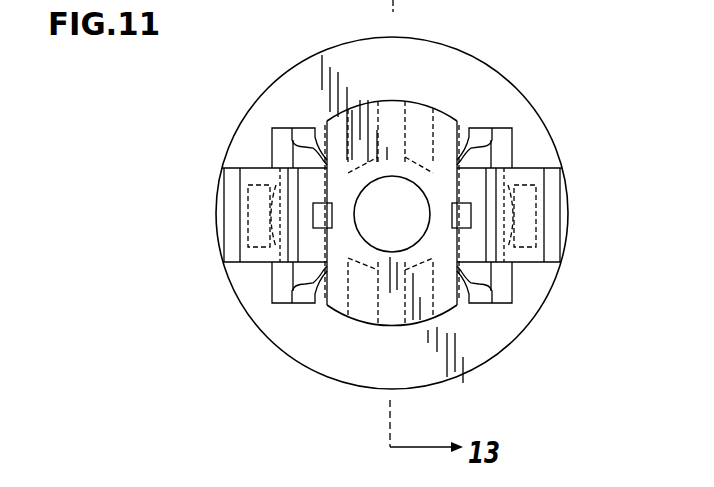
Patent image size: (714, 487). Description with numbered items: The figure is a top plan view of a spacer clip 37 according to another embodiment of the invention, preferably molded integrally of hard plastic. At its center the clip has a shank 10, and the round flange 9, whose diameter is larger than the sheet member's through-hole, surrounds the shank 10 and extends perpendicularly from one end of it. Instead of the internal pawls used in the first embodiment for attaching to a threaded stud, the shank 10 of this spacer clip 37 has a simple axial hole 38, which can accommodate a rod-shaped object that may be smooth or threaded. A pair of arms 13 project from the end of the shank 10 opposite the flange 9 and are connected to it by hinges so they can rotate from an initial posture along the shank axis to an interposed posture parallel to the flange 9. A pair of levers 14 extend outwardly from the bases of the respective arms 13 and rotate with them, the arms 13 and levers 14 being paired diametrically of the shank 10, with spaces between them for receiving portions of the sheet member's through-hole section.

The flange 9 is at (500, 337).
The shank 10 is at (360, 327).
The arms 13 is at (302, 127).
The levers 14 is at (250, 257).
The spacer clip 37 is at (541, 82).
The axial hole 38 is at (376, 186).